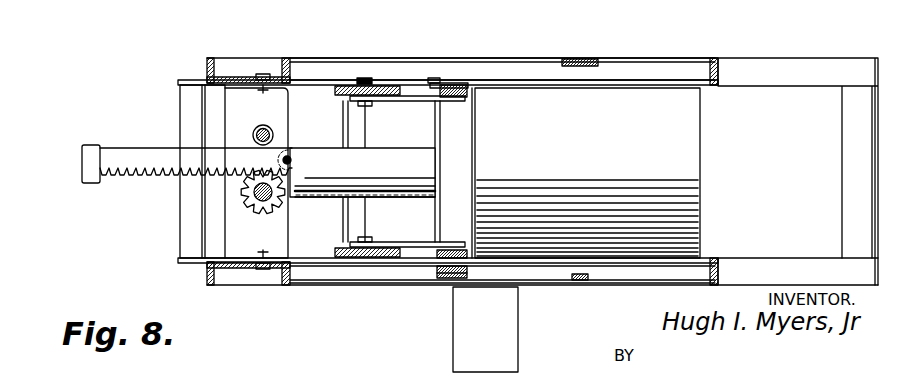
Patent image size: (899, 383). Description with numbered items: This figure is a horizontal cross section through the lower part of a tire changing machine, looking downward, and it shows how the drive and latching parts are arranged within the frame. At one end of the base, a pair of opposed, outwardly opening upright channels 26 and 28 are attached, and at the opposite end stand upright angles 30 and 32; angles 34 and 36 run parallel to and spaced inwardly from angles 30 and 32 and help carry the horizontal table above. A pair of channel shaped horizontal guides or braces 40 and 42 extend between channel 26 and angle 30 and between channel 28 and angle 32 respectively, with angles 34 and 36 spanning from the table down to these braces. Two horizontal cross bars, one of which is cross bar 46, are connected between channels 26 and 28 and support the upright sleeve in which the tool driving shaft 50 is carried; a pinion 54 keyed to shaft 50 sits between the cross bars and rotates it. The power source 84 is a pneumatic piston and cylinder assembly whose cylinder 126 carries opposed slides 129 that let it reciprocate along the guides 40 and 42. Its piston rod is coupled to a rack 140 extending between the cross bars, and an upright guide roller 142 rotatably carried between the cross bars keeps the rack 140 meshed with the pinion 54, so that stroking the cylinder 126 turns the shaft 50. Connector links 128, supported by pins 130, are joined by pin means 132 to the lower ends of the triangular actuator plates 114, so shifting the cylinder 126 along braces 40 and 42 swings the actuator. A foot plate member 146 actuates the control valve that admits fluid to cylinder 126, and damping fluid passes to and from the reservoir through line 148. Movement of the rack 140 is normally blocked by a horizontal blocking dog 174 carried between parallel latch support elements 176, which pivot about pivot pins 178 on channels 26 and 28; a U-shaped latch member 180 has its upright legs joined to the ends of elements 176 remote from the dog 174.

The upright channel 26 is at (242, 74).
The upright channel 28 is at (244, 270).
The upright angle 30 is at (733, 58).
The upright angle 32 is at (735, 283).
The upright angle 34 is at (577, 61).
The upright angle 36 is at (578, 282).
The horizontal guide 40 is at (420, 68).
The horizontal guide 42 is at (375, 280).
The cross bar 46 is at (256, 173).
The tool driving shaft 50 is at (250, 193).
The pinion 54 is at (261, 209).
The power source 84 is at (713, 185).
The triangular plate 114 is at (398, 88).
The cylinder 126 is at (690, 133).
The connector link 128 is at (420, 101).
The slide 129 is at (436, 80).
The pin 130 is at (462, 86).
The pin means 132 is at (362, 78).
The rack 140 is at (128, 150).
The guide roller 142 is at (274, 132).
The foot plate member 146 is at (460, 318).
The line 148 is at (293, 160).
The blocking dog 174 is at (188, 102).
The latch support element 176 is at (317, 84).
The pivot pin 178 is at (268, 76).
The latch member 180 is at (360, 148).